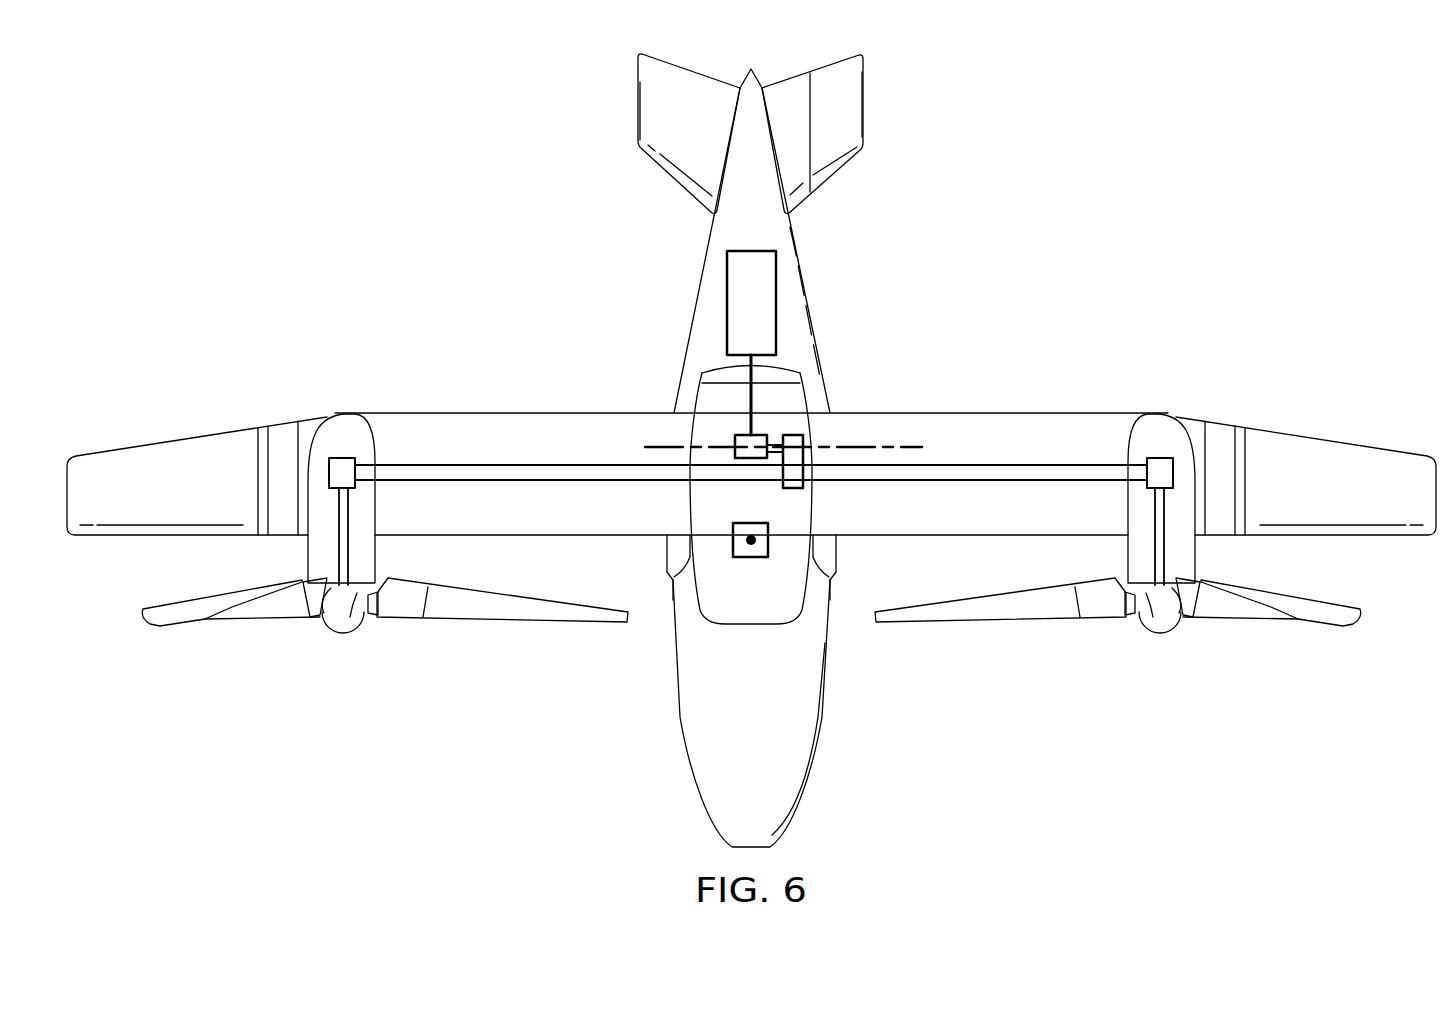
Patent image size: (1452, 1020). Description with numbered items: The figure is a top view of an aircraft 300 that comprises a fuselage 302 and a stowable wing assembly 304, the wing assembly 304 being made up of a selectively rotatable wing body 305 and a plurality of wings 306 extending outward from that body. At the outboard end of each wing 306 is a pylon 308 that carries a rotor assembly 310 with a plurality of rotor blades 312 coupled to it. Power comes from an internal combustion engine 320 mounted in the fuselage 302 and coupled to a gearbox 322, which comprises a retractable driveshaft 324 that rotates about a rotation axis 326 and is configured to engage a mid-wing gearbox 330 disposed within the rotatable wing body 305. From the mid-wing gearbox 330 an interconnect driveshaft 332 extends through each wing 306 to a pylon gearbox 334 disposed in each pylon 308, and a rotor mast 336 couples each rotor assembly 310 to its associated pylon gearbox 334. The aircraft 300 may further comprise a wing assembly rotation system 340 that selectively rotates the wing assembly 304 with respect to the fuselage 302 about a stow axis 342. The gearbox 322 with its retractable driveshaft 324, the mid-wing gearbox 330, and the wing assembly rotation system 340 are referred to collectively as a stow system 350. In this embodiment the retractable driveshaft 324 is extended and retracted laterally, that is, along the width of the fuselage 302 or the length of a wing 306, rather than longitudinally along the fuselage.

The aircraft 300 is at (1076, 104).
The fuselage 302 is at (678, 717).
The stowable wing assembly 304 is at (459, 408).
The selectively rotatable wing body 305 is at (708, 548).
The wing 306 is at (566, 412).
The pylon 308 is at (310, 553).
The rotor assembly 310 is at (339, 642).
The rotor blade 312 is at (178, 604).
The internal combustion engine 320 is at (776, 308).
The gearbox 322 is at (743, 433).
The retractable driveshaft 324 is at (788, 434).
The rotation axis 326 is at (903, 446).
The mid-wing gearbox 330 is at (795, 490).
The interconnect driveshaft 332 is at (537, 486).
The pylon gearbox 334 is at (343, 457).
The rotor mast 336 is at (352, 548).
The wing assembly rotation system 340 is at (746, 559).
The stow axis 342 is at (744, 538).
The stow system 350 is at (700, 357).